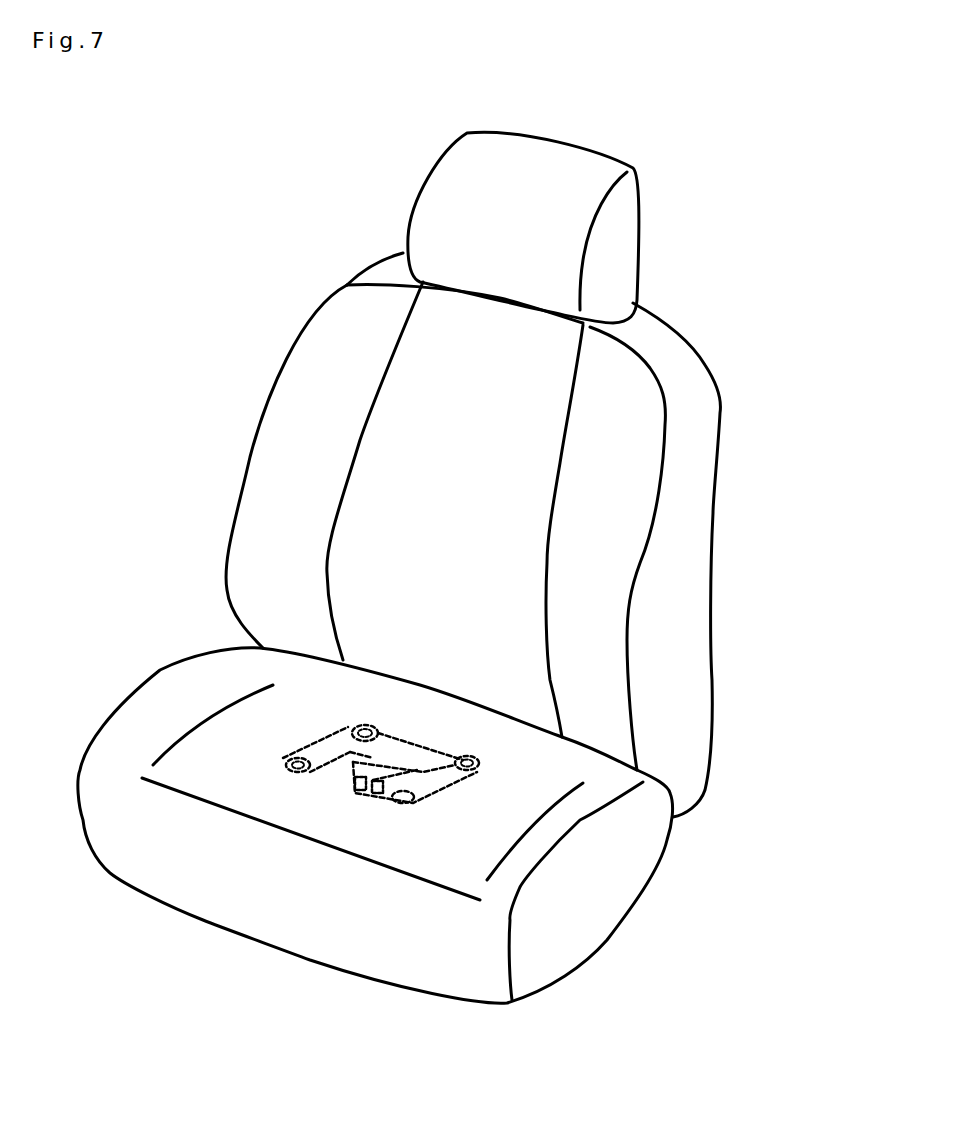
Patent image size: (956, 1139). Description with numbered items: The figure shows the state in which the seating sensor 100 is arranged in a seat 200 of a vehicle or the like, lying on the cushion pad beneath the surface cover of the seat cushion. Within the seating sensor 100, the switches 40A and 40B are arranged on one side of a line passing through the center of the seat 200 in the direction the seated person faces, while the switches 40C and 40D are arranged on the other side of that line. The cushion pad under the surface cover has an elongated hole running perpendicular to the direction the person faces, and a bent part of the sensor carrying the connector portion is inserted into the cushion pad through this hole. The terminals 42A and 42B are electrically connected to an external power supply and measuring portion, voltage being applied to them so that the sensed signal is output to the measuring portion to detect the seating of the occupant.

The seat 200 is at (703, 295).
The seating sensor 100 is at (393, 825).
The switch 40A is at (352, 731).
The switch 40B is at (285, 762).
The switch 40C is at (407, 808).
The switch 40D is at (483, 772).
The terminal 42A is at (357, 795).
The terminal 42B is at (372, 800).